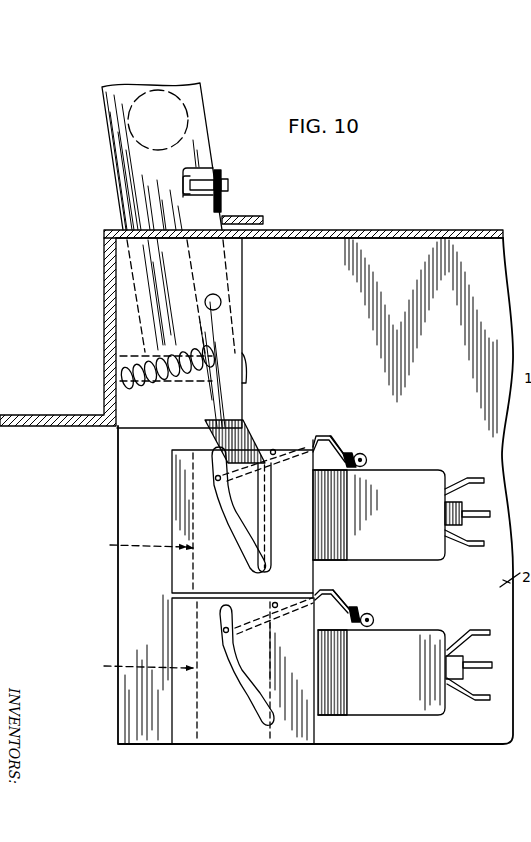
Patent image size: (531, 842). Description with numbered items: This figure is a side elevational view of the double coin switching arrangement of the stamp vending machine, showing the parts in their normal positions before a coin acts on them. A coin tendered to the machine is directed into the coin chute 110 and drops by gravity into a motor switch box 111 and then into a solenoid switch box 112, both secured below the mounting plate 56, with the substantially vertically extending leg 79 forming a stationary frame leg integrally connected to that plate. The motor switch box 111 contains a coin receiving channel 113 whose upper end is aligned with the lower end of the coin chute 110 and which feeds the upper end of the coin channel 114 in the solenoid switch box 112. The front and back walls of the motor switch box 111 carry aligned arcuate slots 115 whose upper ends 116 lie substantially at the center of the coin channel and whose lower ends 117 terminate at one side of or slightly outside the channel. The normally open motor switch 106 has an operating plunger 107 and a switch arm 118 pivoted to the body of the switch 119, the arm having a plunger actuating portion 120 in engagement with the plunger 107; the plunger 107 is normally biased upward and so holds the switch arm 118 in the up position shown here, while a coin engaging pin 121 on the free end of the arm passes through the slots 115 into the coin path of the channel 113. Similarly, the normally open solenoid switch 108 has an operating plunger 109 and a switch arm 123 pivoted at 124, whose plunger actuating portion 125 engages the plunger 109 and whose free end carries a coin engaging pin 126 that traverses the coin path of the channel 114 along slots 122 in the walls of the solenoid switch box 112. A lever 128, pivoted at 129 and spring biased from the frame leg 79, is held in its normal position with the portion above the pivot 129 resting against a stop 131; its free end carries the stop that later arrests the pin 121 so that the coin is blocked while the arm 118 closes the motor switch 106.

The mounting plate 56 is at (335, 229).
The vertically extending leg 79 is at (108, 335).
The motor switch 106 is at (431, 470).
The operating plunger 107 is at (357, 452).
The solenoid switch 108 is at (437, 632).
The operating plunger 109 is at (356, 625).
The coin chute 110 is at (205, 146).
The motor switch box 111 is at (172, 508).
The solenoid switch box 112 is at (174, 730).
The coin receiving channel 113 is at (140, 543).
The coin channel 114 is at (135, 665).
The arcuate slots 115 is at (224, 521).
The upper ends of arcuate slots 116 is at (224, 466).
The lower ends of arcuate slots 117 is at (272, 566).
The switch arm 118 is at (316, 436).
The body of the switch 119 is at (366, 457).
The link strip portion 120 is at (345, 452).
The coin engaging pin 121 is at (214, 478).
The slots 122 is at (214, 638).
The switch arm 123 is at (323, 593).
The pivot 124 is at (374, 620).
The plunger actuating portion 125 is at (352, 610).
The coin engaging pin 126 is at (226, 626).
The lever 128 is at (183, 208).
The pivot 129 is at (222, 299).
The stop 131 is at (254, 216).